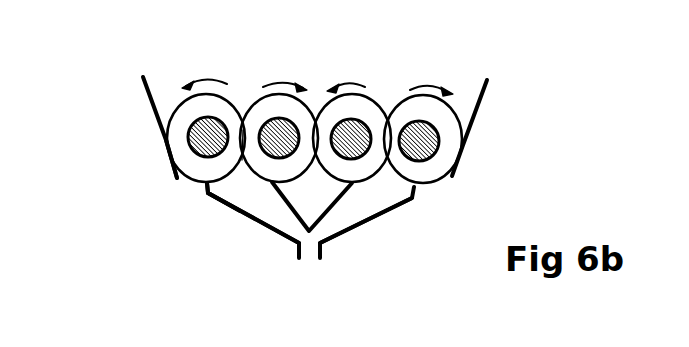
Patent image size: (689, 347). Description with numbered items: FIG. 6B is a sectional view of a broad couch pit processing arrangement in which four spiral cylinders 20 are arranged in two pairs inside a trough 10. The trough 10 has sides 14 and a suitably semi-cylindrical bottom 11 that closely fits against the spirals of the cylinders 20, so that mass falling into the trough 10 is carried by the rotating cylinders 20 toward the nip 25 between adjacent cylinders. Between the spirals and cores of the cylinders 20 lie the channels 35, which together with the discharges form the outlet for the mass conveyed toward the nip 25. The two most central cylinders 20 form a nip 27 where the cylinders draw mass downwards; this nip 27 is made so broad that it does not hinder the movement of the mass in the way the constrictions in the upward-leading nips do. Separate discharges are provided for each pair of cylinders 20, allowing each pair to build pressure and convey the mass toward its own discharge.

The trough 10 is at (153, 112).
The sides of the trough 14 is at (163, 135).
The bottom of the trough 11 is at (180, 190).
The spiral cylinder 20 is at (212, 103).
The channels 35 is at (215, 186).
The nip 25 is at (240, 165).
The nip 27 is at (303, 170).